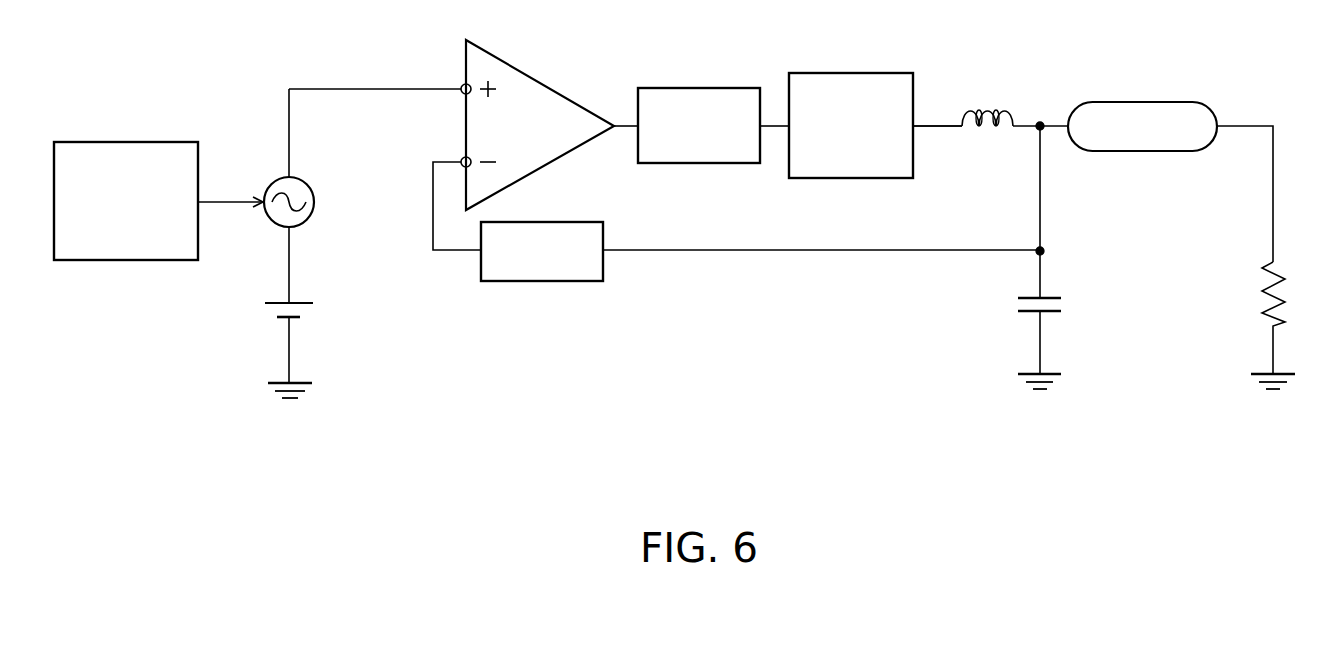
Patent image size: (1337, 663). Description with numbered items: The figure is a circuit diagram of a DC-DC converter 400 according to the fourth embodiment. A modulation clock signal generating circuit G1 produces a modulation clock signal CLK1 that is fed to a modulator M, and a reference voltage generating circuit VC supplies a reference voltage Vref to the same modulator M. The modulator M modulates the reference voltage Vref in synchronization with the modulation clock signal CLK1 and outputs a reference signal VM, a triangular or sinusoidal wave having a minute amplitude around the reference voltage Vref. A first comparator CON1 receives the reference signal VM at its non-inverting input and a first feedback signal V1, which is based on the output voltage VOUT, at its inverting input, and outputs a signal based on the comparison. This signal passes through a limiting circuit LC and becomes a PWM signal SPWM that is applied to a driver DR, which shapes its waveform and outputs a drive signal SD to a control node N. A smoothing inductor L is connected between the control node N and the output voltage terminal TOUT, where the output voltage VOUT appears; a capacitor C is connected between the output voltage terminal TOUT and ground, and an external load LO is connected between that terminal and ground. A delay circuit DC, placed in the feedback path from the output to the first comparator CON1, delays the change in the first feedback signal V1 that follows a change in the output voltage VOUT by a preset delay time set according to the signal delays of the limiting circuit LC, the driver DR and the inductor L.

The DC-DC converter 400 is at (673, 458).
The modulation clock signal generating circuit G1 is at (127, 142).
The modulation clock signal CLK1 is at (230, 190).
The modulator M is at (314, 201).
The reference voltage generating circuit VC is at (300, 301).
The reference voltage Vref is at (254, 314).
The reference signal VM is at (380, 77).
The first feedback signal V1 is at (453, 191).
The first comparator CON1 is at (541, 80).
The limiting circuit LC is at (700, 88).
The PWM signal SPWM is at (775, 123).
The driver DR is at (850, 73).
The drive signal SD is at (937, 142).
The control node N is at (936, 125).
The smoothing inductor L is at (987, 110).
The output voltage terminal TOUT is at (1143, 102).
The output voltage VOUT is at (1250, 180).
The capacitor C is at (1048, 296).
The external load LO is at (1278, 272).
The delay circuit DC is at (540, 282).